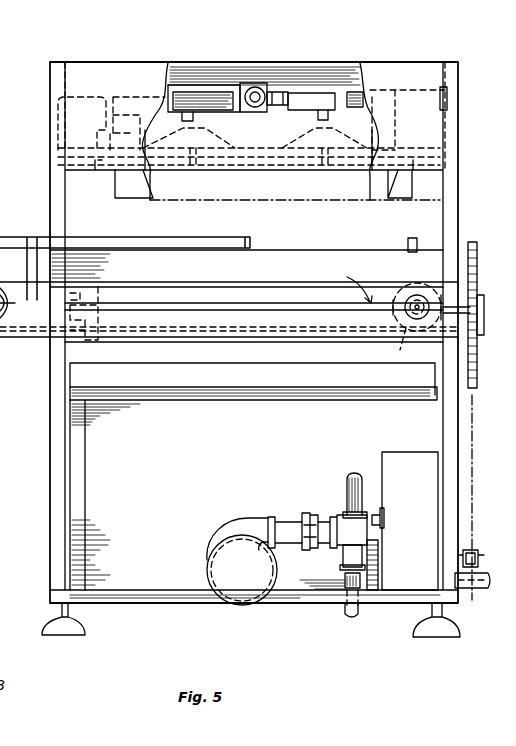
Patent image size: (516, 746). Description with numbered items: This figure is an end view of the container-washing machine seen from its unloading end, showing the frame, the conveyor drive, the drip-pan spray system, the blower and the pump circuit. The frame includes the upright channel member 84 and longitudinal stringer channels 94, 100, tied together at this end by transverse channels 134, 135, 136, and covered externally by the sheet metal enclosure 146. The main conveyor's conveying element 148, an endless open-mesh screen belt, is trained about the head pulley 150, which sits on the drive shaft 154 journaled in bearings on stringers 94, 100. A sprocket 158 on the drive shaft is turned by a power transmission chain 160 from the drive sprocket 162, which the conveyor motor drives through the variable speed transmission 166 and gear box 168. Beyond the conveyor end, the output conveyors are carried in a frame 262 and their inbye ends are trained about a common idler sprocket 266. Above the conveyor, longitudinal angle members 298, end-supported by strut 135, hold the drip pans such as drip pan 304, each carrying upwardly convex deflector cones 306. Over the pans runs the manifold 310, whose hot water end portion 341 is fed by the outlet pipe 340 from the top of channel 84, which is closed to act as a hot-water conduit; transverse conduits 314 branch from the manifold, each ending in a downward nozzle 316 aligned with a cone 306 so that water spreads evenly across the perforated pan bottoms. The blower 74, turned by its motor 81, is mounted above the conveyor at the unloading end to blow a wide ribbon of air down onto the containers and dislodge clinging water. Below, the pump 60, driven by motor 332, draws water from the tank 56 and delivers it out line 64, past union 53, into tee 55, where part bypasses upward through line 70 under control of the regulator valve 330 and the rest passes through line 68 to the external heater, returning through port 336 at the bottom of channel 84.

The union 53 is at (310, 517).
The tee 55 is at (347, 538).
The tank 56 is at (237, 467).
The pump 60 is at (217, 535).
The line 64 is at (287, 522).
The line 68 is at (363, 555).
The line 70 is at (353, 473).
The blower 74 is at (115, 97).
The motor 81 is at (55, 97).
The upright channel member 84 is at (453, 203).
The longitudinal stringer channel 94 is at (82, 296).
The stringer 100 is at (425, 288).
The transverse channel 134 is at (343, 68).
The transverse channel 135 is at (275, 170).
The transverse channel 136 is at (158, 608).
The sheet metal enclosure 146 is at (97, 72).
The conveying element 148 is at (128, 338).
The head pulley 150 is at (235, 337).
The drive shaft 154 is at (88, 338).
The sprocket 158 is at (480, 290).
The power transmission chain 160 is at (473, 455).
The drive sprocket 162 is at (474, 553).
The variable speed transmission 166 is at (427, 539).
The gear box 168 is at (360, 593).
The frame 262 is at (25, 347).
The idler sprocket 266 is at (423, 337).
The longitudinal angle member 298 is at (415, 165).
The drip pan 304 is at (272, 157).
The deflector cone 306 is at (319, 121).
The manifold 310 is at (268, 73).
The transverse conduit 314 is at (307, 97).
The nozzle 316 is at (166, 113).
The regulator valve 330 is at (384, 518).
The motor 332 is at (253, 581).
The port 336 is at (455, 590).
The outlet pipe 340 is at (268, 107).
The hot water end portion 341 is at (247, 83).